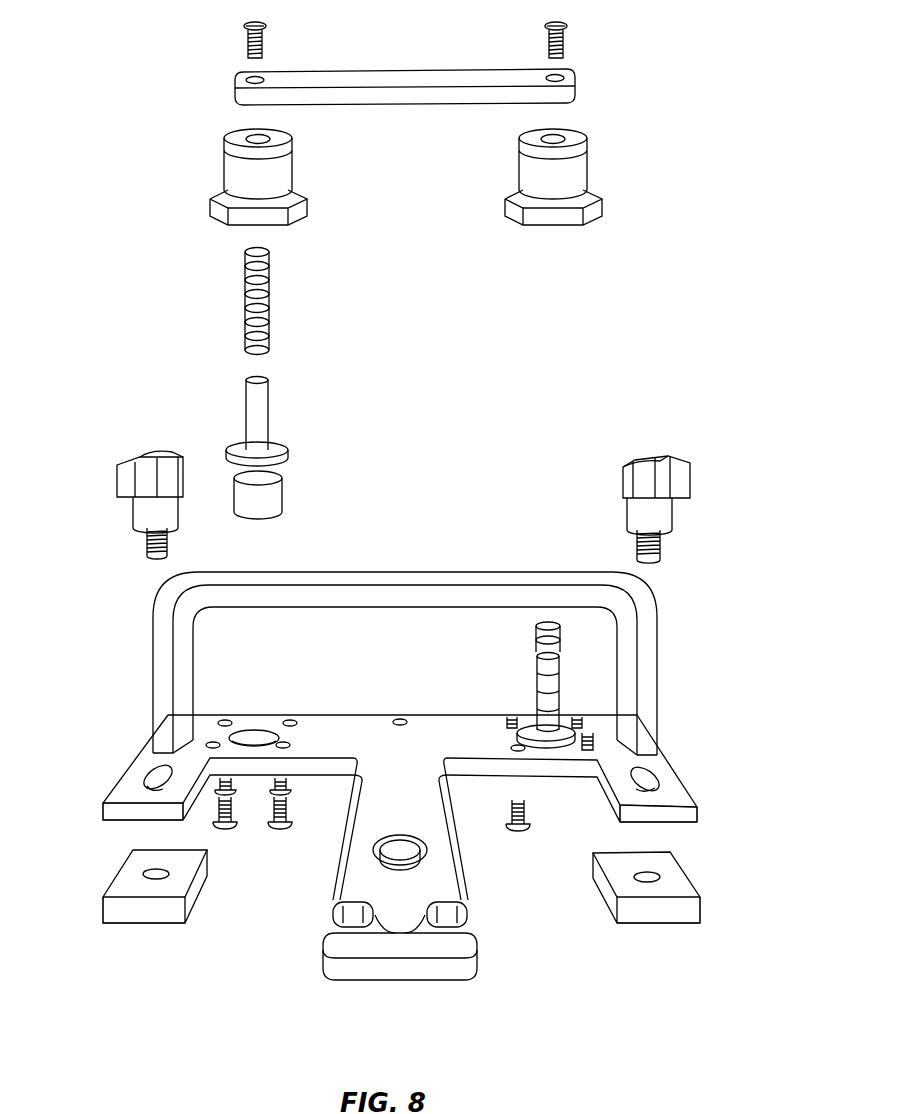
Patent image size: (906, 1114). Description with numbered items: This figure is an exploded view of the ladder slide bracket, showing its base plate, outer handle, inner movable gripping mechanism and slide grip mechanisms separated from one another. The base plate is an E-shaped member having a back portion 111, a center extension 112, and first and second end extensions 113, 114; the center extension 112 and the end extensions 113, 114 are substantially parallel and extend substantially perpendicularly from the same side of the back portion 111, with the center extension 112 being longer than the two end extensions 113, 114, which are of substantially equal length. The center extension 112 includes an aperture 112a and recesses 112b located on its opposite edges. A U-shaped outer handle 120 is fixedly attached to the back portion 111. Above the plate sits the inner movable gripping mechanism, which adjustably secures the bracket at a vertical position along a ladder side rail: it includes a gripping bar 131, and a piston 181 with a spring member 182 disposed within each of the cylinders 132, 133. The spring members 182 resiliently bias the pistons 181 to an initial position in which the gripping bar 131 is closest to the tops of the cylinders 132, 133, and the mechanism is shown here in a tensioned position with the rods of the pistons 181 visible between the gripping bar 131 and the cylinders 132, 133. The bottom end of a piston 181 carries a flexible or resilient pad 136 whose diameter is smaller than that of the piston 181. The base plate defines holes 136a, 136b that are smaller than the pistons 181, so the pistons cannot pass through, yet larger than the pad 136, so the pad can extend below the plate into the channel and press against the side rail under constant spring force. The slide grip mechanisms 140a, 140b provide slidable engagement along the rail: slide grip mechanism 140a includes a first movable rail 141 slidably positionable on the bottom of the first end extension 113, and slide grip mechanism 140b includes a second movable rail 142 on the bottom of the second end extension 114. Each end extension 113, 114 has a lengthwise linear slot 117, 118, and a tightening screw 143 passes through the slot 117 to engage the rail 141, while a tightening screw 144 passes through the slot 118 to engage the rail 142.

The gripping bar 131 is at (385, 80).
The cylinder 132 is at (317, 166).
The cylinder 133 is at (621, 167).
The spring member 182 is at (273, 298).
The piston 181 is at (255, 405).
The pad 136 is at (278, 505).
The tightening screw 143 is at (110, 460).
The tightening screw 144 is at (708, 465).
The outer handle 120 is at (394, 567).
The back portion 111 is at (420, 751).
The hole 136a is at (262, 730).
The hole 136b is at (560, 752).
The linear slot 117 is at (150, 781).
The linear slot 118 is at (652, 782).
The first end extension 113 is at (88, 800).
The second end extension 114 is at (722, 808).
The center extension 112 is at (417, 993).
The aperture 112a is at (388, 838).
The recesses 112b is at (418, 914).
The first movable rail 141 is at (117, 912).
The second movable rail 142 is at (680, 908).
The slide grip mechanism 140a is at (138, 940).
The slide grip mechanism 140b is at (660, 945).